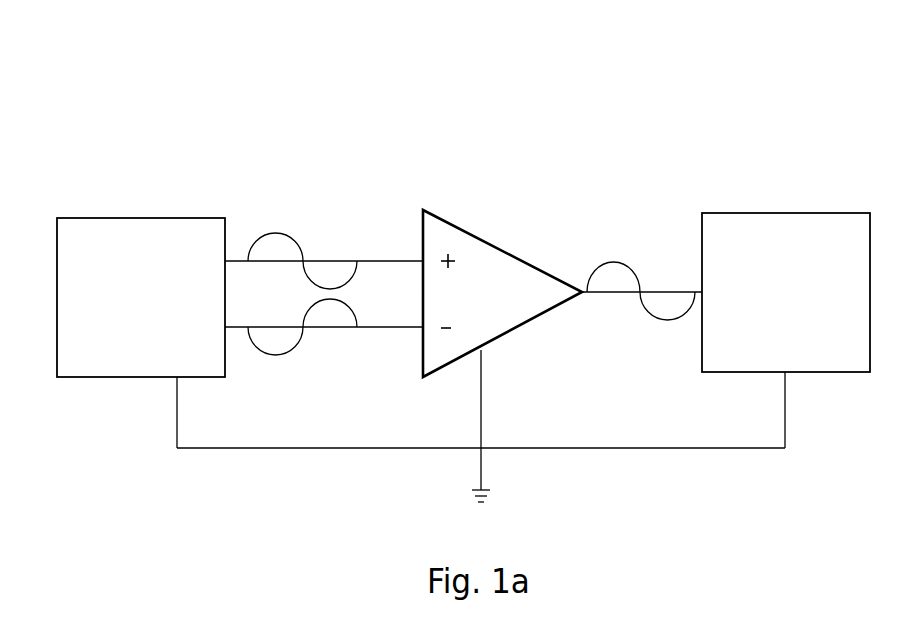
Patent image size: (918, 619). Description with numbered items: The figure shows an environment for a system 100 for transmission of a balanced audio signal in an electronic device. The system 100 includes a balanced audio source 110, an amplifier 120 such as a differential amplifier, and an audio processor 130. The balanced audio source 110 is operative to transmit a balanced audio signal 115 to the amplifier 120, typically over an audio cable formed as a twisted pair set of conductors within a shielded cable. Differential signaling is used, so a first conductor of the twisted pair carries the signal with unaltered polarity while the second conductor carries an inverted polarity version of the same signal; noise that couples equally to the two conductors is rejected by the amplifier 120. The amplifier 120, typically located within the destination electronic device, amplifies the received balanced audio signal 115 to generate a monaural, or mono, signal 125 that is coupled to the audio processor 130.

The system 100 is at (441, 34).
The balanced audio source 110 is at (141, 297).
The balanced audio signal 115 is at (299, 215).
The amplifier 120 is at (496, 226).
The output signal 125 is at (628, 237).
The audio processor 130 is at (786, 292).